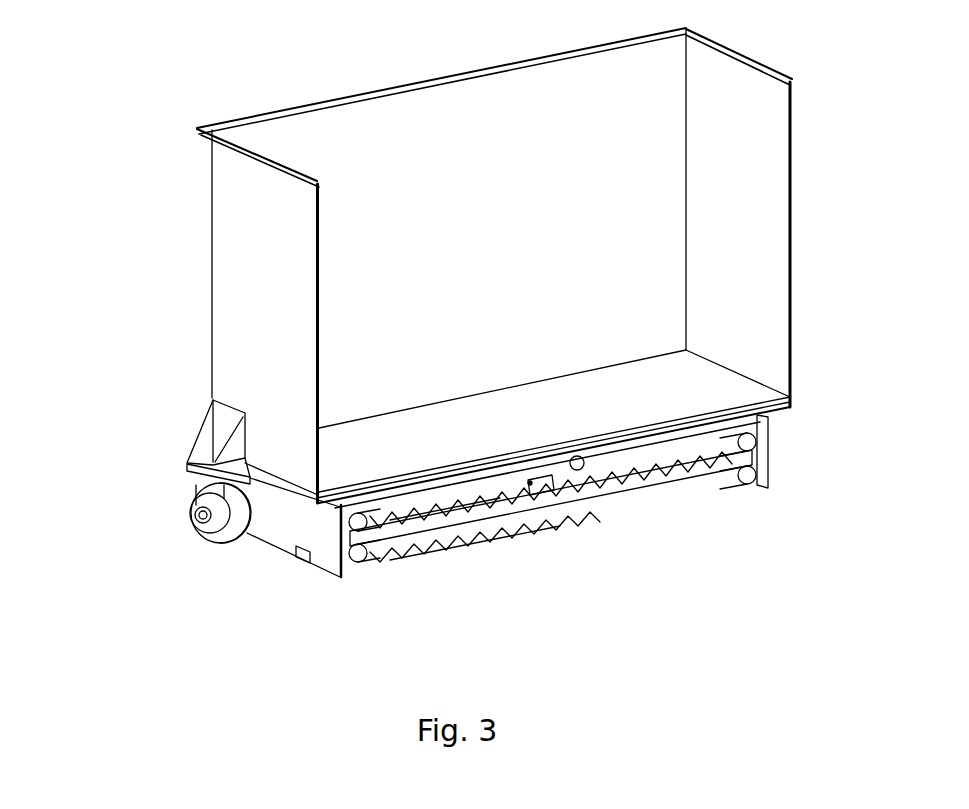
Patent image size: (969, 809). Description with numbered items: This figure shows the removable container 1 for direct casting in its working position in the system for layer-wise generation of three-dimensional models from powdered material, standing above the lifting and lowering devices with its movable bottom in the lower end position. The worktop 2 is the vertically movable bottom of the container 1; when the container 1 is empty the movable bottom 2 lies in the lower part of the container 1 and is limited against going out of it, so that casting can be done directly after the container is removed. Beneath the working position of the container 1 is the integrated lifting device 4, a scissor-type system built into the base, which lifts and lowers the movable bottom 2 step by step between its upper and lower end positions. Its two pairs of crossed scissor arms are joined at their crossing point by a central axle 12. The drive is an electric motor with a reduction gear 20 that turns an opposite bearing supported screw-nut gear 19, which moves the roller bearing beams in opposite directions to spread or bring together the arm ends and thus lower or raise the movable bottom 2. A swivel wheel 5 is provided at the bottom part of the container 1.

The container 1 is at (240, 266).
The worktop 2 is at (710, 395).
The lifting device 4 is at (330, 527).
The caster wheel 5 is at (217, 536).
The central axle 12 is at (540, 487).
The screw-nut gear 19 is at (660, 478).
The electric motor with a reduction gear 20 is at (445, 535).